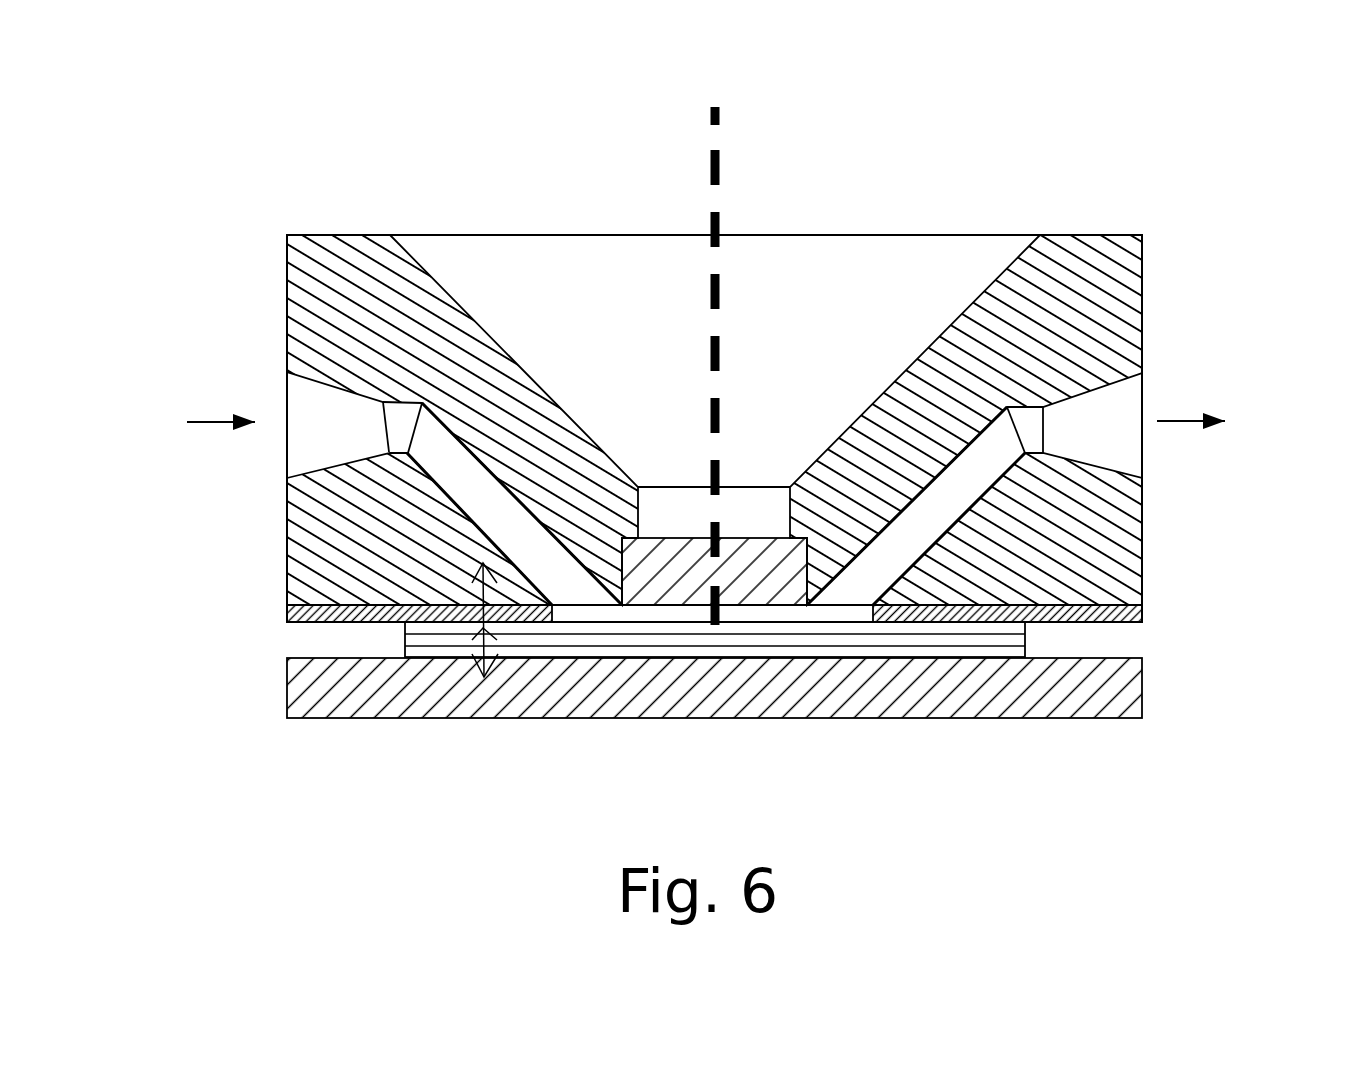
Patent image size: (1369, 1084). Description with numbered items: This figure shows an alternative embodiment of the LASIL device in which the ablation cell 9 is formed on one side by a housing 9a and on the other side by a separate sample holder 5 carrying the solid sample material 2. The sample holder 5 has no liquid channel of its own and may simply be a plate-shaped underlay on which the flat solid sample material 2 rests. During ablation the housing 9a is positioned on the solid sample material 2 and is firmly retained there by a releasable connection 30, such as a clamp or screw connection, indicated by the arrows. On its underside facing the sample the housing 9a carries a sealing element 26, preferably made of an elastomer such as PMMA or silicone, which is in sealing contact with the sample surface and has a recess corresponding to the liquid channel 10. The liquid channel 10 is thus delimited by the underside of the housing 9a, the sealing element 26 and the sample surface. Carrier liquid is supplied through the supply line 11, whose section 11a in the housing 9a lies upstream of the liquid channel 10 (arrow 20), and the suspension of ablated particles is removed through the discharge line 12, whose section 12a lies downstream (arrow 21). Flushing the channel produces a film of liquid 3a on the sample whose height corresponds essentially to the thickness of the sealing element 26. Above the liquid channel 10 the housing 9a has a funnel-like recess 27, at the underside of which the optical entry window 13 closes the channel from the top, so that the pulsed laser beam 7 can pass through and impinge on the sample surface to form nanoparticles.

The ablation cell 9 is at (701, 445).
The housing 9a is at (357, 273).
The laser beam 7 is at (710, 227).
The recess 27 is at (867, 303).
The discharge line 12 is at (957, 493).
The arrow 20 is at (203, 438).
The arrow 21 is at (1188, 427).
The supply line 11 is at (480, 505).
The section of the supply line 11a is at (510, 528).
The section of the discharge line 12a is at (903, 550).
The entry window 13 is at (662, 590).
The film of liquid 3a is at (773, 613).
The liquid channel 10 is at (753, 613).
The solid sample material 2 is at (993, 640).
The sealing element 26 is at (1143, 622).
The sample holder 5 is at (500, 693).
The releasable connection 30 is at (480, 680).